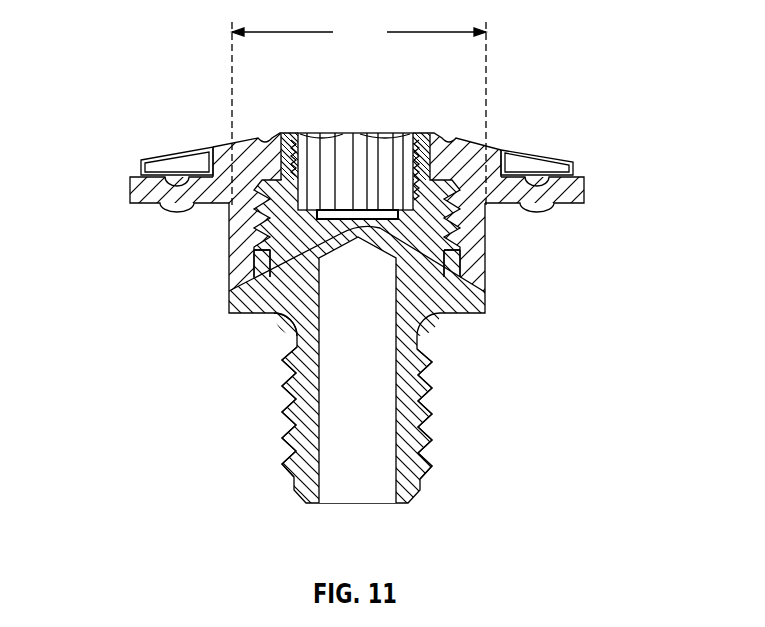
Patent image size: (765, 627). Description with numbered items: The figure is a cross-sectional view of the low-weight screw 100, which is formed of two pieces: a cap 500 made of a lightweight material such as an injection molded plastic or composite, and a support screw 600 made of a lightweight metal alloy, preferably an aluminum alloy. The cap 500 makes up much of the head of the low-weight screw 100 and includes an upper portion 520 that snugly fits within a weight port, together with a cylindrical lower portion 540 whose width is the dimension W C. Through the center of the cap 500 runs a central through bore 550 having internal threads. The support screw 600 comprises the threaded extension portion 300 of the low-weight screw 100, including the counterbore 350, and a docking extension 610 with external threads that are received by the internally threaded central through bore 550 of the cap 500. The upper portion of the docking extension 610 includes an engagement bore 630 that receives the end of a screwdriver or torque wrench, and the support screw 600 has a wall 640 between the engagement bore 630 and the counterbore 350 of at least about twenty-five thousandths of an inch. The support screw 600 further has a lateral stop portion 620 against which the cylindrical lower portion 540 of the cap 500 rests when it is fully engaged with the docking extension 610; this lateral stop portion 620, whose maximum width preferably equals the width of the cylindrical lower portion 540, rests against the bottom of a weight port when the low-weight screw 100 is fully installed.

The low-weight screw 100 is at (142, 106).
The threaded extension portion 300 is at (431, 414).
The counterbore 350 is at (358, 489).
The cap 500 is at (555, 173).
The upper portion 520 is at (572, 190).
The cylindrical lower portion 540 is at (475, 252).
The central through bore 550 is at (266, 265).
The support screw 600 is at (454, 316).
The docking extension 610 is at (430, 215).
The lateral stop portion 620 is at (271, 316).
The engagement bore 630 is at (357, 158).
The wall 640 is at (230, 293).